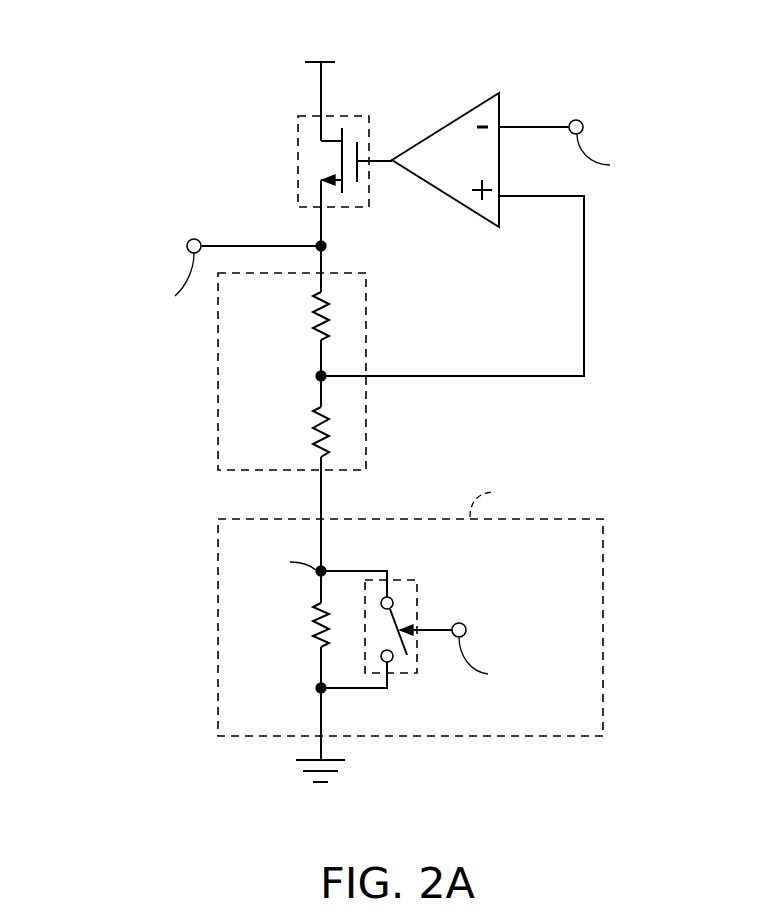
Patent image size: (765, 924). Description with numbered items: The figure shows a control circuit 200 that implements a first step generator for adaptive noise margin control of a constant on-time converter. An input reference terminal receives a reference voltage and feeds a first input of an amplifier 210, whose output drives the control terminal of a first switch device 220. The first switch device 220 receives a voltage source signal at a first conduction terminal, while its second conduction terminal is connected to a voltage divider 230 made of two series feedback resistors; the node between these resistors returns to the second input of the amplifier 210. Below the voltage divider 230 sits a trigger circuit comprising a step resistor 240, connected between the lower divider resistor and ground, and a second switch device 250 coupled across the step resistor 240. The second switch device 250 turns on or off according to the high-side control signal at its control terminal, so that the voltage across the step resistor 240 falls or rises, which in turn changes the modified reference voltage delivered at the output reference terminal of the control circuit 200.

The control circuit 200 is at (110, 35).
The amplifier 210 is at (498, 92).
The first switch device 220 is at (298, 136).
The voltage divider 230 is at (367, 318).
The step resistor 240 is at (310, 638).
The second switch device 250 is at (400, 580).